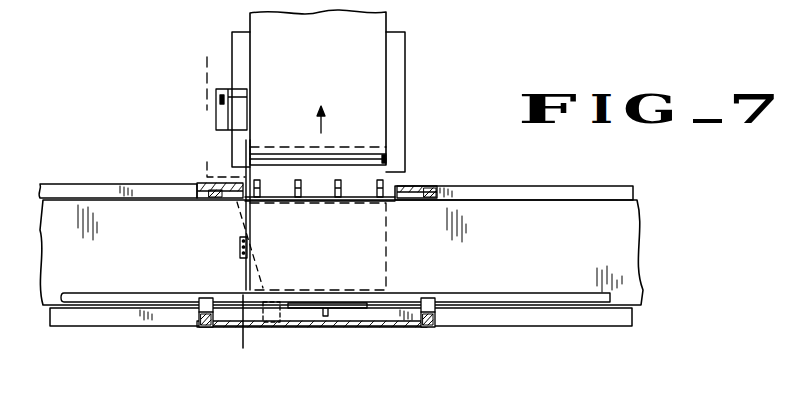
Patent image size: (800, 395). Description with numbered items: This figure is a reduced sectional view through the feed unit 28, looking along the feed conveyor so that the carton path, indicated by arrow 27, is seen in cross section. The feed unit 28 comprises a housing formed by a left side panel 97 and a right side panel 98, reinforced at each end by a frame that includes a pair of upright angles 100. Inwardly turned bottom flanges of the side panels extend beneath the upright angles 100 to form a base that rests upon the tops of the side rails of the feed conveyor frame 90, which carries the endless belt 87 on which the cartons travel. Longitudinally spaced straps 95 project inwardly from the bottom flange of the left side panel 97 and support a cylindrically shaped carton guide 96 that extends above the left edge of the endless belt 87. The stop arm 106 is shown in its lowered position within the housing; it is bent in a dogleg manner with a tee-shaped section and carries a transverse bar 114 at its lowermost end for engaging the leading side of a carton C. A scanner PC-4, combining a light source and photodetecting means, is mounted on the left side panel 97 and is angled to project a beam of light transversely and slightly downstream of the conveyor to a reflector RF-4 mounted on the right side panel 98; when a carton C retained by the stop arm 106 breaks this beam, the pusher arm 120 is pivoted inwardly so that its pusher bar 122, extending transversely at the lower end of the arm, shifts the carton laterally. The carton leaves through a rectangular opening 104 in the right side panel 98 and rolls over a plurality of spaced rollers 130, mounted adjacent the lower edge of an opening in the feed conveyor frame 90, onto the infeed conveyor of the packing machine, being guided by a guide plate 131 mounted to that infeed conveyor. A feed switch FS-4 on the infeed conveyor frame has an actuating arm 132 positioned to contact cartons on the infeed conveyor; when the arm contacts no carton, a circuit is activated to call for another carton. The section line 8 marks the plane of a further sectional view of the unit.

The section line 8- 8 is at (205, 72).
The feed switch FS-4 is at (222, 117).
The actuating arm 132 is at (250, 95).
The guide plate 131 is at (258, 166).
The rectangular opening 104 is at (395, 187).
The right side panel 98 is at (408, 186).
The feed unit 28 is at (438, 183).
The feed conveyor frame 90 is at (635, 198).
The endless belt 87 is at (636, 227).
The upright angles 100 is at (200, 191).
The reflector RF-4 is at (223, 198).
The transverse bar 114 is at (252, 223).
The rollers 130 is at (377, 190).
The stop arm 106 is at (240, 245).
The direction arrow 27 is at (523, 253).
The carton guide 96 is at (72, 295).
The straps 95 is at (428, 302).
The scanner PC-4 is at (277, 302).
The pusher bar 122 is at (322, 303).
The carton C is at (388, 275).
The pusher arm 120 is at (318, 320).
The left side panel 97 is at (430, 328).